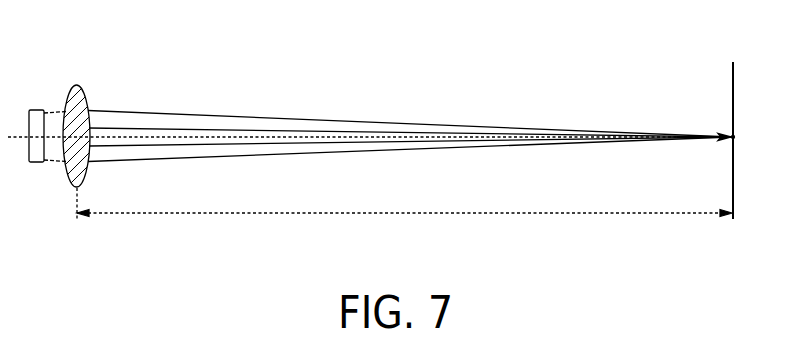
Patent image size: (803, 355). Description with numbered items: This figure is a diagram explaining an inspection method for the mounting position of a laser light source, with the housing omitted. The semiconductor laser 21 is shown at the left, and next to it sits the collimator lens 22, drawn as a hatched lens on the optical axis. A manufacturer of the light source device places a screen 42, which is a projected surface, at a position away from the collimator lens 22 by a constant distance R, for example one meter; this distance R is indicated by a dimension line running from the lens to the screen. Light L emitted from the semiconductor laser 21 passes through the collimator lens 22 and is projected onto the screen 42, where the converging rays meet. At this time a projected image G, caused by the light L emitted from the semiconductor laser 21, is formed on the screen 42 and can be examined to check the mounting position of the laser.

The semiconductor laser 21 is at (33, 115).
The collimator lens 22 is at (75, 86).
The light L is at (274, 117).
The screen 42 is at (731, 80).
The projected image G is at (736, 138).
The constant distance R is at (404, 204).